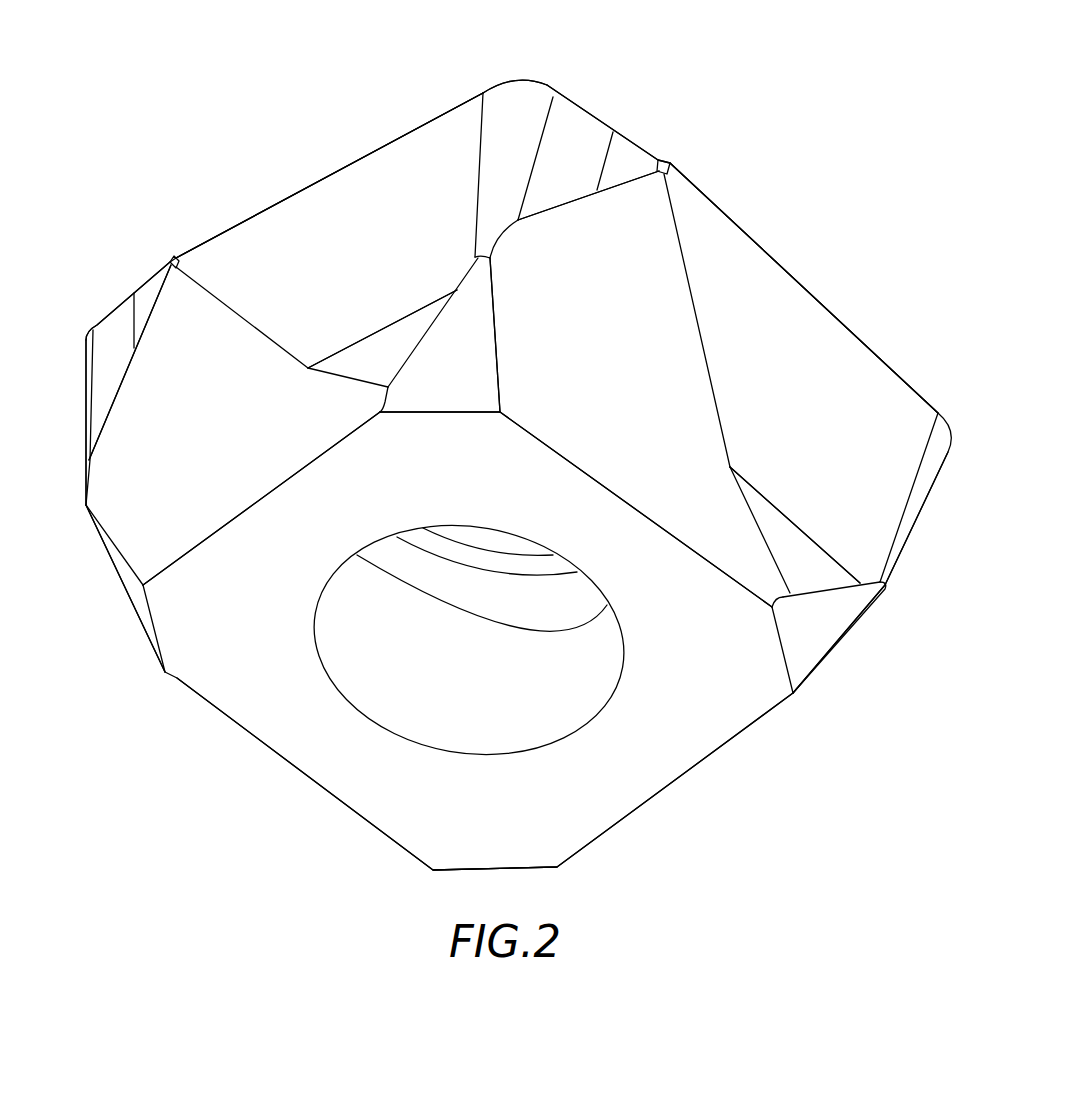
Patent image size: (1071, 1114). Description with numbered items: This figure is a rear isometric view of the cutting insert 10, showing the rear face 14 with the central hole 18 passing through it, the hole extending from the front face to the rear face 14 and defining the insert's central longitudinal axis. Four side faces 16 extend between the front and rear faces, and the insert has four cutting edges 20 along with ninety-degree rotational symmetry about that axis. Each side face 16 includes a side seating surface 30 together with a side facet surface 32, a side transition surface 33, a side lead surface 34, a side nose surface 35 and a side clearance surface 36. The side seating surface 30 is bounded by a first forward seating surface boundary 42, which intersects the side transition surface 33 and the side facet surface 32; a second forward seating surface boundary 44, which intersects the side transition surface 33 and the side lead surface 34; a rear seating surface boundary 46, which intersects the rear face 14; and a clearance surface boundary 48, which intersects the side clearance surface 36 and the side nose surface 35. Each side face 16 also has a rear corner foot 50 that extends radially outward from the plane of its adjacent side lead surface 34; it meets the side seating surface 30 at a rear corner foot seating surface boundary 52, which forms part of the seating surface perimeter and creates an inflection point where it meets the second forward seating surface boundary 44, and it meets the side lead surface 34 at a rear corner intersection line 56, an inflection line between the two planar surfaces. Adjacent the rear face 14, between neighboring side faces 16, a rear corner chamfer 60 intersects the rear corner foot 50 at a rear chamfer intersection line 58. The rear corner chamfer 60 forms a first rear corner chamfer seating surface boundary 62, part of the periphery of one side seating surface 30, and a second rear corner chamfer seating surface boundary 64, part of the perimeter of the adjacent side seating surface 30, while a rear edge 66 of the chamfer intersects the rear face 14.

The cutting insert 10 is at (245, 84).
The rear face 14 is at (620, 800).
The side face 16 is at (437, 161).
The central hole 18 is at (357, 703).
The cutting edge 20 is at (272, 195).
The side seating surface 30 is at (193, 443).
The side facet surface 32 is at (158, 276).
The side transition surface 33 is at (173, 255).
The side lead surface 34 is at (365, 172).
The side nose surface 35 is at (522, 102).
The side clearance surface 36 is at (573, 121).
The first forward seating surface boundary 42 is at (157, 302).
The second forward seating surface boundary 44 is at (262, 335).
The rear seating surface boundary 46 is at (247, 507).
The clearance surface boundary 48 is at (122, 389).
The rear corner foot 50 is at (400, 338).
The rear corner foot seating surface boundary 52 is at (342, 378).
The rear corner intersection line 56 is at (345, 350).
The rear chamfer intersection line 58 is at (442, 312).
The rear corner chamfer 60 is at (130, 583).
The first rear corner chamfer seating surface boundary 62 is at (385, 404).
The second rear corner chamfer seating surface boundary 64 is at (497, 346).
The rear edge 66 is at (430, 413).